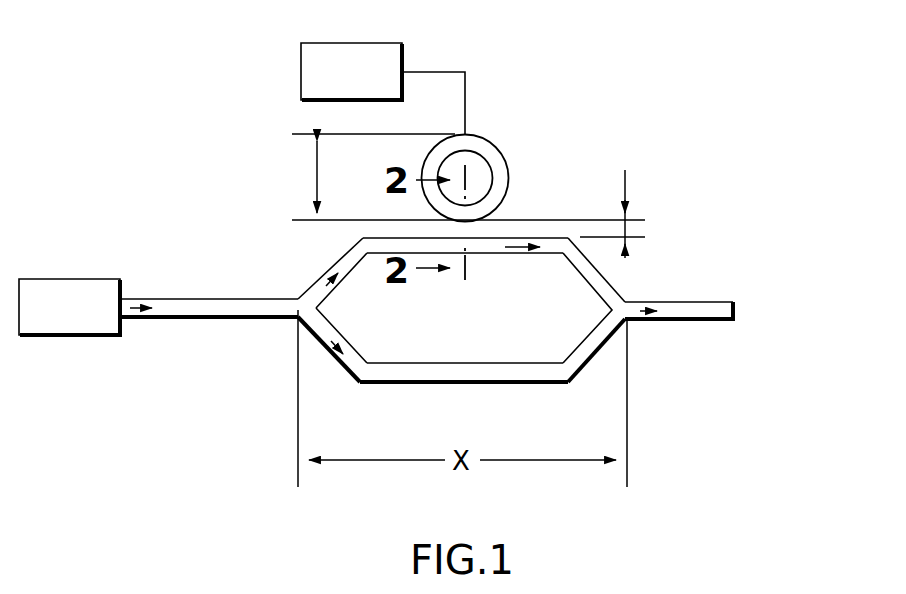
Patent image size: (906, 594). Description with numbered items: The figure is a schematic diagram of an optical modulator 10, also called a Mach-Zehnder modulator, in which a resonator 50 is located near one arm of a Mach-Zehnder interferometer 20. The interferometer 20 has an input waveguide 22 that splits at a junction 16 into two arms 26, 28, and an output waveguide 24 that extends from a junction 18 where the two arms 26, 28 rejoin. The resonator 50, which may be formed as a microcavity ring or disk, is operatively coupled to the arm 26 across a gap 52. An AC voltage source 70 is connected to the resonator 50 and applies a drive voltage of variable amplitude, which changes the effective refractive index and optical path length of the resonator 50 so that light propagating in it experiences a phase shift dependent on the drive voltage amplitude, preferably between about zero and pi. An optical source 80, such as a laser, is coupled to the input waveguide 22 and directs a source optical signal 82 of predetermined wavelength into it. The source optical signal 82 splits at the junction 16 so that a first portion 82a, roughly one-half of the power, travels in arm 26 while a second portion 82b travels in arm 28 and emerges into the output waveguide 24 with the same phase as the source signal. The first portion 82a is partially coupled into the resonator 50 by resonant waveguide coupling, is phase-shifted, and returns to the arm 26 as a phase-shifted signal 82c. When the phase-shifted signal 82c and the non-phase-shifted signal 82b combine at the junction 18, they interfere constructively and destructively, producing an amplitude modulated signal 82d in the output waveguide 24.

The optical modulator 10 is at (250, 222).
The junction 16 is at (298, 322).
The junction 18 is at (628, 300).
The Mach-Zehnder interferometer 20 is at (326, 360).
The input waveguide 22 is at (197, 308).
The output waveguide 24 is at (705, 302).
The arm 26 is at (380, 245).
The arm 28 is at (438, 374).
The resonator 50 is at (545, 106).
The gap 52 is at (625, 170).
The AC voltage source 70 is at (338, 43).
The optical source 80 is at (70, 279).
The source optical signal 82 is at (134, 317).
The first portion of the optical signal 82a is at (322, 295).
The second portion of the optical signal 82b is at (332, 340).
The phase-shifted optical signal 82c is at (511, 249).
The amplitude modulated signal 82d is at (642, 320).